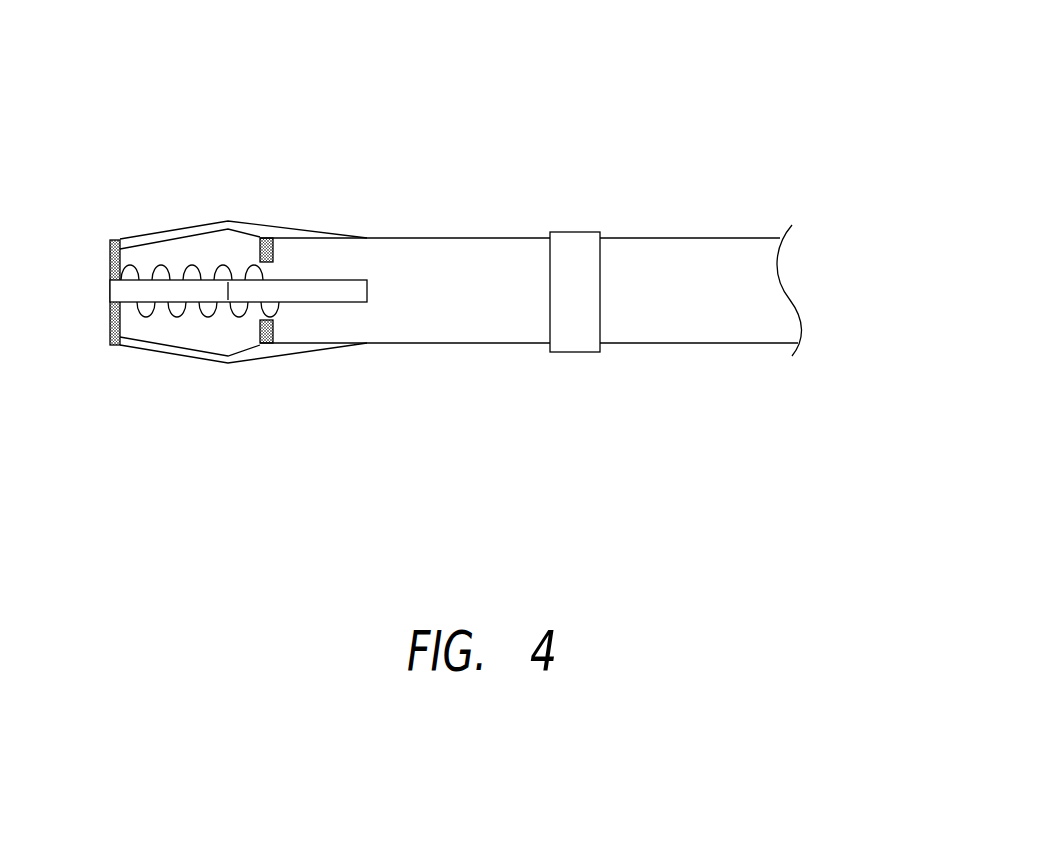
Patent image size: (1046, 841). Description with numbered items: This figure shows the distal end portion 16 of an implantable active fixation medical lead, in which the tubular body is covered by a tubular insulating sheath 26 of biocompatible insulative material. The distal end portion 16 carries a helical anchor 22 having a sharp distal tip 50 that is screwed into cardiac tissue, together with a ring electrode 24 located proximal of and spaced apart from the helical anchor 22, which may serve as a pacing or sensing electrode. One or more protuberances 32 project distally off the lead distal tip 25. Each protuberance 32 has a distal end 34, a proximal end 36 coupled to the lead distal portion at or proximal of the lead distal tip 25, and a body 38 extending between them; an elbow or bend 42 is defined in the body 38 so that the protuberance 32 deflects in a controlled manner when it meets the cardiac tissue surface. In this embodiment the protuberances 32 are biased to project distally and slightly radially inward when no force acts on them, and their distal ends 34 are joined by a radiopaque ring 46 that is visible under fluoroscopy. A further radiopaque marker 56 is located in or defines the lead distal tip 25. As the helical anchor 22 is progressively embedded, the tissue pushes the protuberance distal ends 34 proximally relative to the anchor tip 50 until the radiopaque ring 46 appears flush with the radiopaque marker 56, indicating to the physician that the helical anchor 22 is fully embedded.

The distal end portion 16 is at (553, 128).
The helical anchor 22 is at (160, 265).
The ring electrode 24 is at (573, 231).
The lead distal tip 25 is at (263, 237).
The tubular insulating sheath 26 is at (733, 343).
The protuberance 32 is at (176, 231).
The protuberance distal end 34 is at (117, 239).
The protuberance proximal end 36 is at (367, 237).
The protuberance body 38 is at (218, 222).
The bend 42 is at (229, 219).
The radiopaque ring 46 is at (110, 263).
The sharp distal tip of helical anchor 50 is at (120, 335).
The radiopaque marker 56 is at (273, 248).